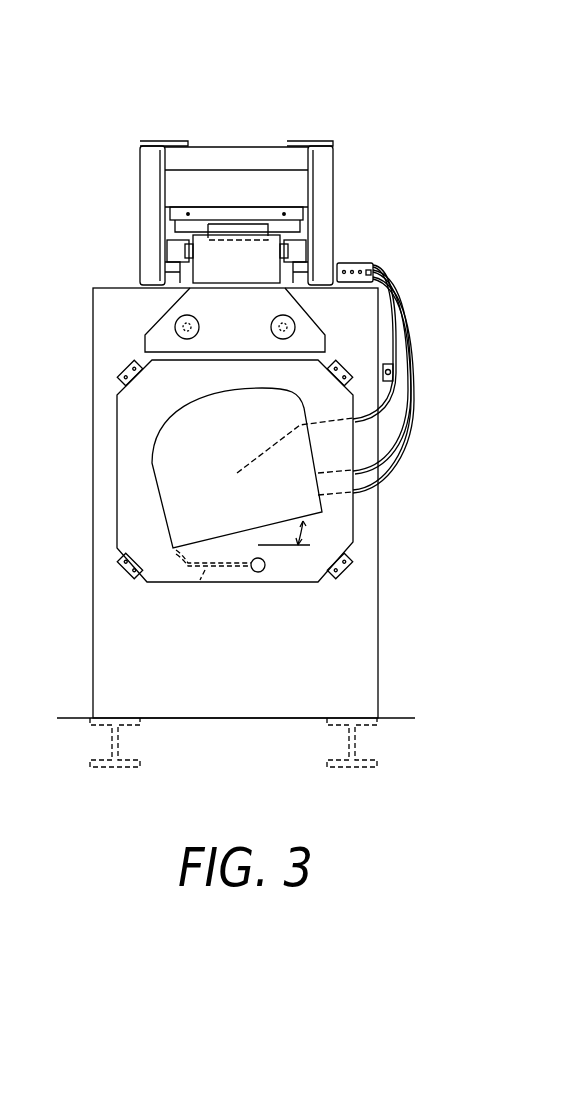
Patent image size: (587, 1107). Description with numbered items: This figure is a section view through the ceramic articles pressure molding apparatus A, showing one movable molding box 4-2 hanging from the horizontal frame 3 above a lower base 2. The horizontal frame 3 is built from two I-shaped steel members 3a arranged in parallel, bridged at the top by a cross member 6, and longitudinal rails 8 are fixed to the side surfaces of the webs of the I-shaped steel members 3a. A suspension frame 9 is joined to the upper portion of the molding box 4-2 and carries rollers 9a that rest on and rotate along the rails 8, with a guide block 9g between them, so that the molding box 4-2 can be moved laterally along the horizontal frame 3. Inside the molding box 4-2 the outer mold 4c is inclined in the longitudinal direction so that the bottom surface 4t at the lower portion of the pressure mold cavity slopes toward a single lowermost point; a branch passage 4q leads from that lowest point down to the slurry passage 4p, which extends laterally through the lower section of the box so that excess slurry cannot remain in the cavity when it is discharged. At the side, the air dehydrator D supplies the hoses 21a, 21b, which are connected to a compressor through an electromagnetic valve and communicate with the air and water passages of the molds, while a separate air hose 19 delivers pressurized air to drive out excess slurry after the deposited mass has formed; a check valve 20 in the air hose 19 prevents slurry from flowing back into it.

The ceramic articles pressure molding apparatus A is at (362, 85).
The base frame 2 is at (93, 638).
The horizontal frame 3 is at (226, 184).
The I-shaped steel members 3a is at (168, 141).
The cross bar 6 is at (236, 200).
The longitudinal rails 8 is at (142, 271).
The suspension frames 9 is at (152, 313).
The rollers 9a is at (142, 233).
The guide block 9g is at (210, 226).
The air dehydrator D is at (396, 266).
The air hose 19 is at (394, 318).
The check valve 20 is at (394, 374).
The hose 21a is at (386, 488).
The hose 21b is at (390, 448).
The movable molding box 4-2 is at (117, 528).
The outer mold 4c is at (148, 470).
The bottom surface 4t is at (222, 536).
The slurry passage 4p is at (265, 572).
The branch passage 4q is at (200, 580).